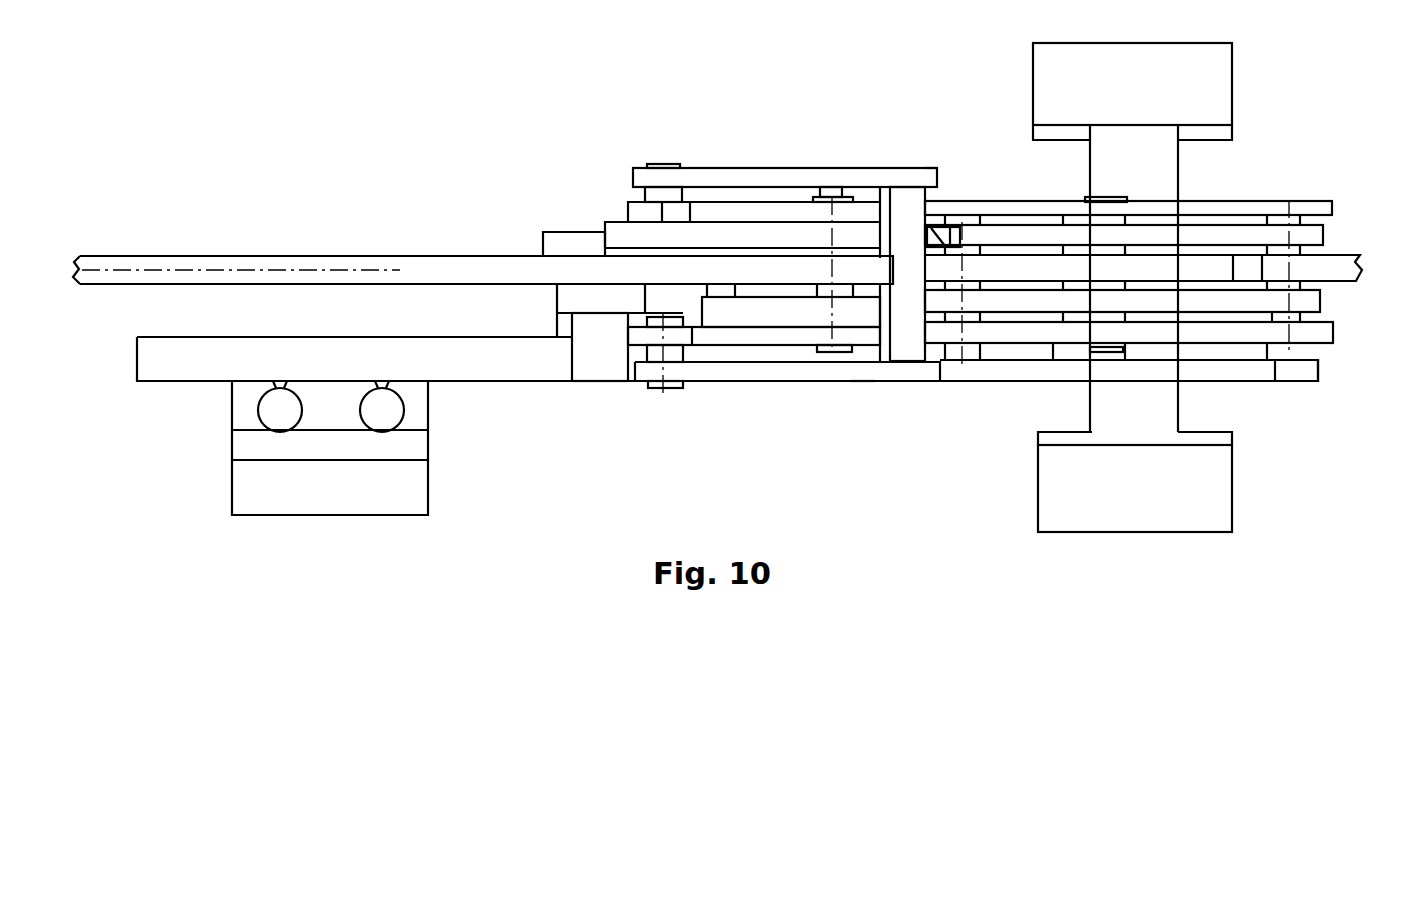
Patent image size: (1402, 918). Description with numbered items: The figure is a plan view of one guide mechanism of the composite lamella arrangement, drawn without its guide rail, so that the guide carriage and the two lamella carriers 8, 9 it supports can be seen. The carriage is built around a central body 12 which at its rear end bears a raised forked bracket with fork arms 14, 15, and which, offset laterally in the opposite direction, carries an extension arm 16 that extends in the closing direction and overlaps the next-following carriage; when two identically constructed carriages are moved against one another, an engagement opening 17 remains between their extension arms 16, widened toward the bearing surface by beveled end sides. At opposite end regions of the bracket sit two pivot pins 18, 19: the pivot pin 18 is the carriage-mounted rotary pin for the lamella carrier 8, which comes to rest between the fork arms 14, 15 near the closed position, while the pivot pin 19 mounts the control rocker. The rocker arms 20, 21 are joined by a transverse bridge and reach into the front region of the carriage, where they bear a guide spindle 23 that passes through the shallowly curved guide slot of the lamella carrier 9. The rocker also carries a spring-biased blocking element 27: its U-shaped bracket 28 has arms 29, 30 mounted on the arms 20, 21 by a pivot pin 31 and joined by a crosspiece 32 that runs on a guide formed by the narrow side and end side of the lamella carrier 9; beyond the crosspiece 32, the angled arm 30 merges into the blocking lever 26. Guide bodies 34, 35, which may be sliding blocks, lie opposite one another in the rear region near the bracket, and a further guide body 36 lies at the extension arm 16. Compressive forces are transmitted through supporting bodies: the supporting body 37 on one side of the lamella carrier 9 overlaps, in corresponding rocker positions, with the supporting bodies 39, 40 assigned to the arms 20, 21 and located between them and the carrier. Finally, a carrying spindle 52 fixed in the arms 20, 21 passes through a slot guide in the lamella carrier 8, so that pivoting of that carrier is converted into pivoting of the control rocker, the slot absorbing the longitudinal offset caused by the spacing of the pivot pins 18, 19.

The lamella carrier 8 is at (1340, 262).
The lamella carrier 9 is at (204, 260).
The central body 12 is at (558, 300).
The fork arm 14 is at (1315, 237).
The fork arm 15 is at (1320, 305).
The extension arm 16 is at (456, 367).
The engagement opening 17 is at (595, 366).
The pivot pin 18 is at (963, 224).
The pivot pin 19 is at (1322, 365).
The arm of the control rocker 20 is at (1269, 204).
The arm of the control rocker 21 is at (1320, 342).
The guide spindle 23 is at (822, 195).
The blocking lever 26 is at (1005, 370).
The blocking element 27 is at (862, 382).
The bracket 28 is at (931, 158).
The arm of the bracket 29 is at (697, 177).
The arm of the bracket 30 is at (712, 372).
The pivot pin 31 is at (668, 164).
The crosspiece 32 is at (906, 205).
The guide body 34 is at (1137, 96).
The guide body 35 is at (1142, 501).
The guide body 36 is at (300, 501).
The supporting body 37 is at (553, 242).
The supporting body 39 is at (620, 238).
The supporting body 40 is at (785, 318).
The carrying spindle 52 is at (1100, 220).